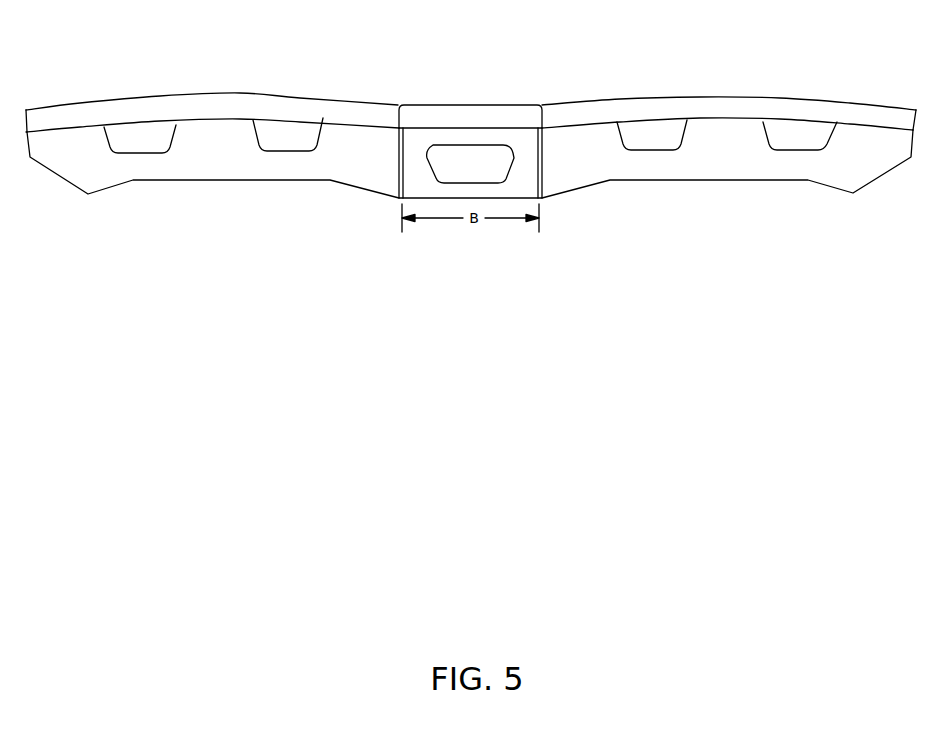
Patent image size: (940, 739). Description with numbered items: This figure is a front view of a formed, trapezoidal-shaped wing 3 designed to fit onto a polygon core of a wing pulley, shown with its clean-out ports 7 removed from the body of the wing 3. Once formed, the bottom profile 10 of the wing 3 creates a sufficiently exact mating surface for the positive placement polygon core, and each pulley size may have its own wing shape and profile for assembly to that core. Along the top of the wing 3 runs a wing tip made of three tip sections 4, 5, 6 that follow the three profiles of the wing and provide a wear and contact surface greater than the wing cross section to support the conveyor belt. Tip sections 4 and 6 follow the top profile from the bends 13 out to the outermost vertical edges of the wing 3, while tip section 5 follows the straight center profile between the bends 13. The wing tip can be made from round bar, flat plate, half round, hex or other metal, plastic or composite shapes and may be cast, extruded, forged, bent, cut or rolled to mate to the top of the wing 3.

The formed wing 3 is at (82, 165).
The tip section 4 is at (157, 97).
The tip section 5 is at (530, 90).
The tip section 6 is at (812, 97).
The clean-out ports 7 is at (152, 153).
The bottom profile 10 is at (787, 182).
The bends 13 is at (527, 143).